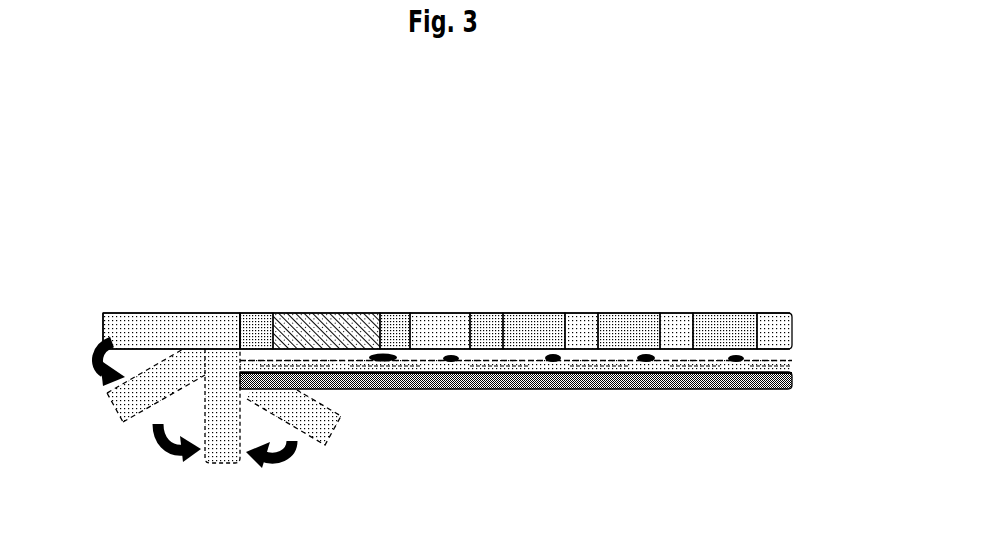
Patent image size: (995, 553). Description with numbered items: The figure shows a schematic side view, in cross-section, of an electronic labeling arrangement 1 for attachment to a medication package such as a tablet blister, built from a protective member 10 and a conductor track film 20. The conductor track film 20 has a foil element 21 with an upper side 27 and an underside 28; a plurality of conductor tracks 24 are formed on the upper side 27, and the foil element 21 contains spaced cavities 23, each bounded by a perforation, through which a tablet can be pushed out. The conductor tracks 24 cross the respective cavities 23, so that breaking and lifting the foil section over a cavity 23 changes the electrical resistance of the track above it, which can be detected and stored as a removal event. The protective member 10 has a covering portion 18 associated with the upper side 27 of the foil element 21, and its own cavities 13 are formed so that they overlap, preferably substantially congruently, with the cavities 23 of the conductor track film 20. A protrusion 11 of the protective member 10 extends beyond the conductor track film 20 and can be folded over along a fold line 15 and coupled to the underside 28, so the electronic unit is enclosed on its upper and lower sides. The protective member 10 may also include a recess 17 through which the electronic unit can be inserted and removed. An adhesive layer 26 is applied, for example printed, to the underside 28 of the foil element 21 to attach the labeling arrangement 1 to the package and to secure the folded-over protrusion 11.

The electronic labeling arrangement 1 is at (94, 227).
The protective member 10 is at (758, 252).
The protrusion 11 is at (175, 321).
The cavities 13 is at (535, 325).
The fold line 15 is at (240, 304).
The recess 17 is at (332, 324).
The covering portion 18 is at (401, 324).
The conductor track film 20 is at (764, 429).
The foil element 21 is at (359, 366).
The cavities 23 is at (446, 370).
The conductor tracks 24 is at (553, 360).
The adhesive layer 26 is at (622, 384).
The upper side 27 is at (486, 358).
The underside 28 is at (688, 378).